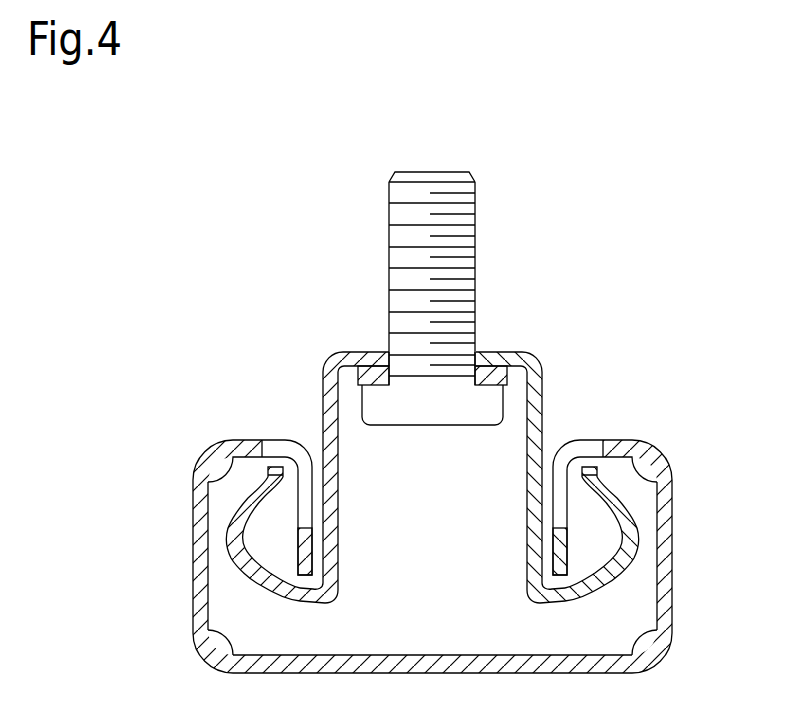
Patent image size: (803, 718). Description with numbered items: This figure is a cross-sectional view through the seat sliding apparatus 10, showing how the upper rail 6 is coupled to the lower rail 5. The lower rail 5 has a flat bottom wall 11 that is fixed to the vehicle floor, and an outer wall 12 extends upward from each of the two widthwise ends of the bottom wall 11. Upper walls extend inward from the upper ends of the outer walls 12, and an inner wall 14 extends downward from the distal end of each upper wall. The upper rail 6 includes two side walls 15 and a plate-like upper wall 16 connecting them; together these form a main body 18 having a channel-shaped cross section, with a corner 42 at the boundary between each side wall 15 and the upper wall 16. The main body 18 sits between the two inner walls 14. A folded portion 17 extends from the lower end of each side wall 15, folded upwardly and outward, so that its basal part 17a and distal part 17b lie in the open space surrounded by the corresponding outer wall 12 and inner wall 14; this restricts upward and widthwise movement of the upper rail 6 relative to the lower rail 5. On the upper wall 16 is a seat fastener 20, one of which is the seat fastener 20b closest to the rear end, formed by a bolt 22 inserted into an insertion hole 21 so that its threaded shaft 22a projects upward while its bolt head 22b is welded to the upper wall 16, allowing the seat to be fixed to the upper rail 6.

The seat sliding apparatus 10 is at (154, 167).
The lower rail 5 is at (432, 532).
The bottom wall 11 is at (445, 660).
The outer wall 12 is at (200, 545).
The inner wall 14 is at (303, 553).
The upper rail 6 is at (432, 471).
The main body 18 is at (432, 471).
The corner 42 is at (327, 359).
The side wall 15 is at (332, 455).
The upper wall 16 is at (485, 355).
The insertion hole 21 is at (398, 356).
The folded portion 17 is at (243, 578).
The basal part 17a is at (305, 598).
The distal part 17b is at (276, 468).
The seat fastener 20 is at (469, 296).
The seat fastener closest to the rear end 20b is at (432, 177).
The bolt 22 is at (412, 328).
The threaded shaft 22a is at (398, 237).
The bolt head 22b is at (417, 422).